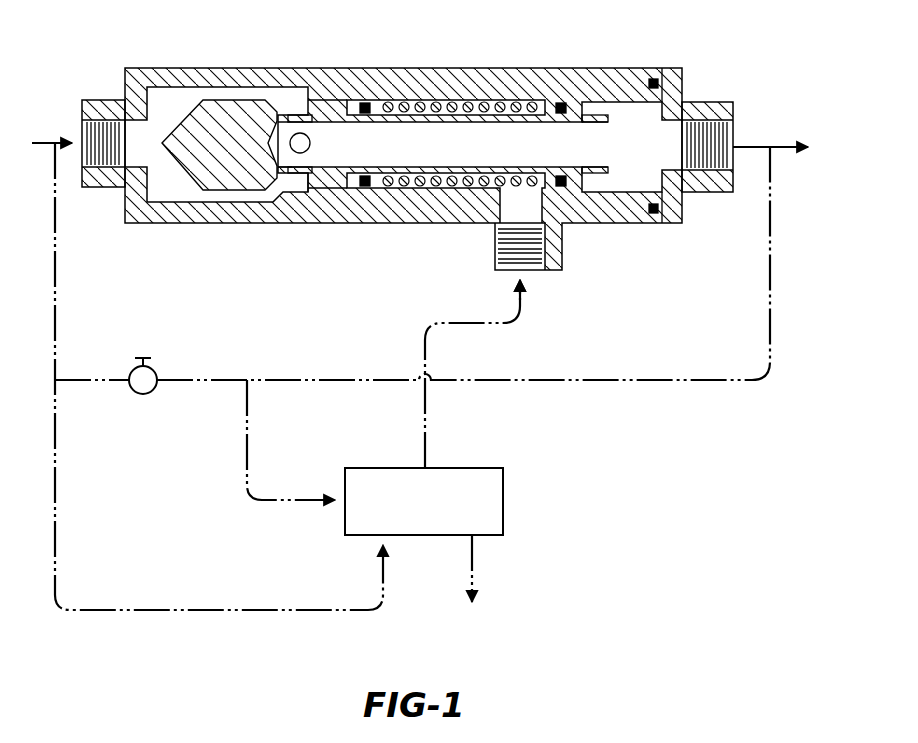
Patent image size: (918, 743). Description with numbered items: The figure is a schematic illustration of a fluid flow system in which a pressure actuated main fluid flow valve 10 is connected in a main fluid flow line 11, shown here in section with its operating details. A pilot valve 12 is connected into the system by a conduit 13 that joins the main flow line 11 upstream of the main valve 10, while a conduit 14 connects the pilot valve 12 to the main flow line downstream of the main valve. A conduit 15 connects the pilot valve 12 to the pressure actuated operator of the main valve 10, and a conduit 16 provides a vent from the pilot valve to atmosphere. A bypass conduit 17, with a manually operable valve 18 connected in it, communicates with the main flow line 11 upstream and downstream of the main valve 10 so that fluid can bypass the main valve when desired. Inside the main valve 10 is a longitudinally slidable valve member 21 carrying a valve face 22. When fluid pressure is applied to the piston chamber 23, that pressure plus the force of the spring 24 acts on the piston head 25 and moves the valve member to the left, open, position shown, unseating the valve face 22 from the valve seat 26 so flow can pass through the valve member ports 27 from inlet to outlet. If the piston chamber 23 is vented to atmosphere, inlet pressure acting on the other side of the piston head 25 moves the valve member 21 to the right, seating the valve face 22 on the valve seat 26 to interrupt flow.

The main fluid flow valve 10 is at (421, 52).
The main fluid flow line 11 is at (52, 143).
The pilot valve 12 is at (371, 446).
The conduit 13 is at (178, 598).
The conduit 14 is at (249, 478).
The conduit 15 is at (422, 424).
The conduit 16 is at (470, 573).
The bypass conduit 17 is at (178, 380).
The manually operable valve 18 is at (136, 392).
The valve member 21 is at (181, 123).
The valve face 22 is at (272, 110).
The piston chamber 23 is at (458, 102).
The spring 24 is at (490, 103).
The piston head 25 is at (378, 188).
The valve seat 26 is at (312, 183).
The valve member ports 27 is at (309, 139).